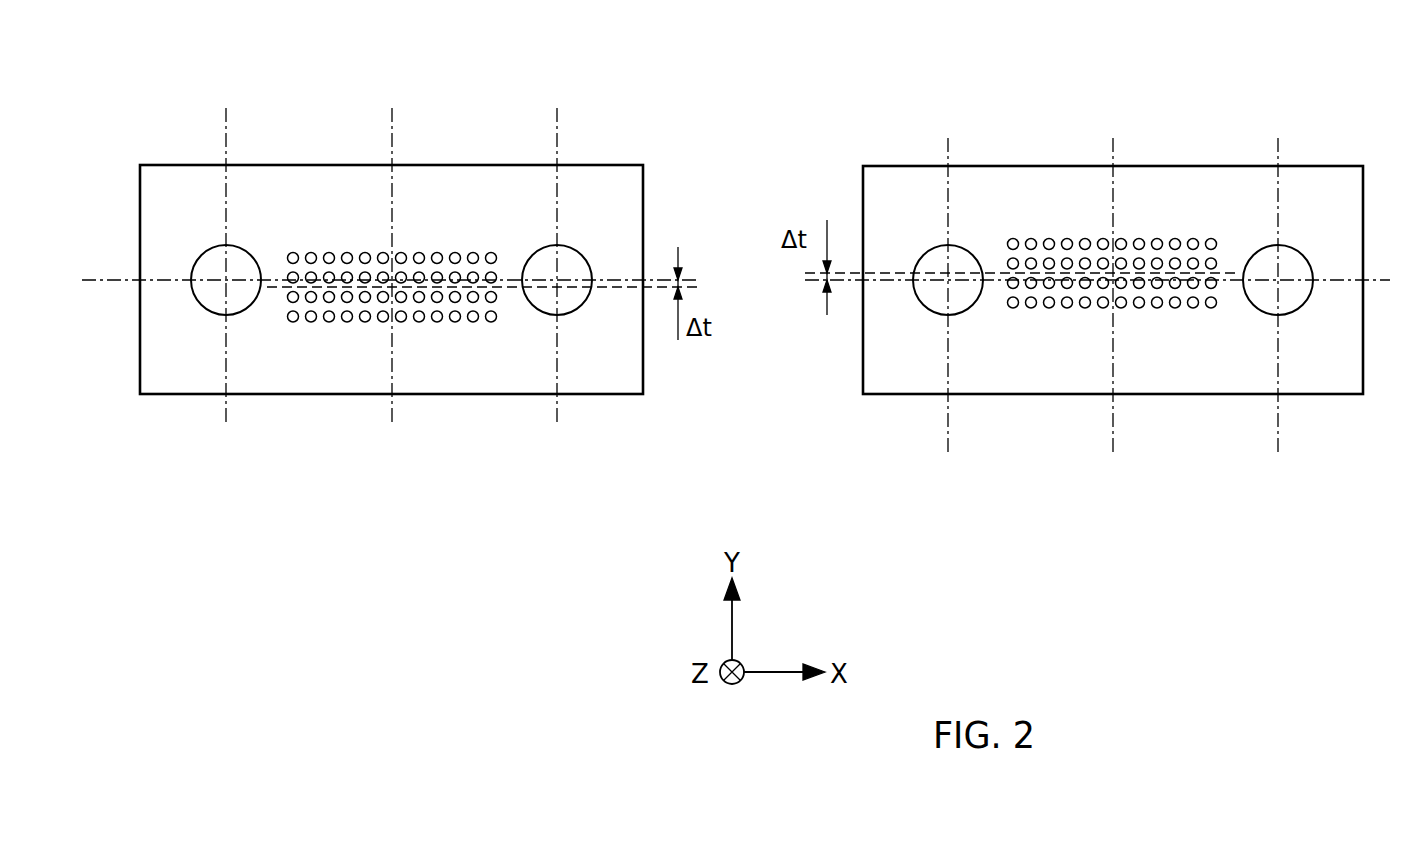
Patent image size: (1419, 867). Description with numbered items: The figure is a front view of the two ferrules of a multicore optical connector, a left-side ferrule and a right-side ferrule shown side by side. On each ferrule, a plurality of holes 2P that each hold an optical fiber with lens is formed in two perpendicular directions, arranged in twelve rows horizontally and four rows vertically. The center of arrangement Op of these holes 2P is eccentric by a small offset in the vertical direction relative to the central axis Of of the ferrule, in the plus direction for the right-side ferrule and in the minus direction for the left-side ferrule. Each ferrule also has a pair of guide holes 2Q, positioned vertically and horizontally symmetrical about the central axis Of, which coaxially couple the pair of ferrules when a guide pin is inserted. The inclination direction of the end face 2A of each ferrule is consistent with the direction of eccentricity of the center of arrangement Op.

The end face 2A is at (496, 183).
The guide hole 2Q is at (198, 270).
The hole 2P is at (329, 253).
The central axis Of is at (390, 278).
The center of arrangement Op is at (389, 288).